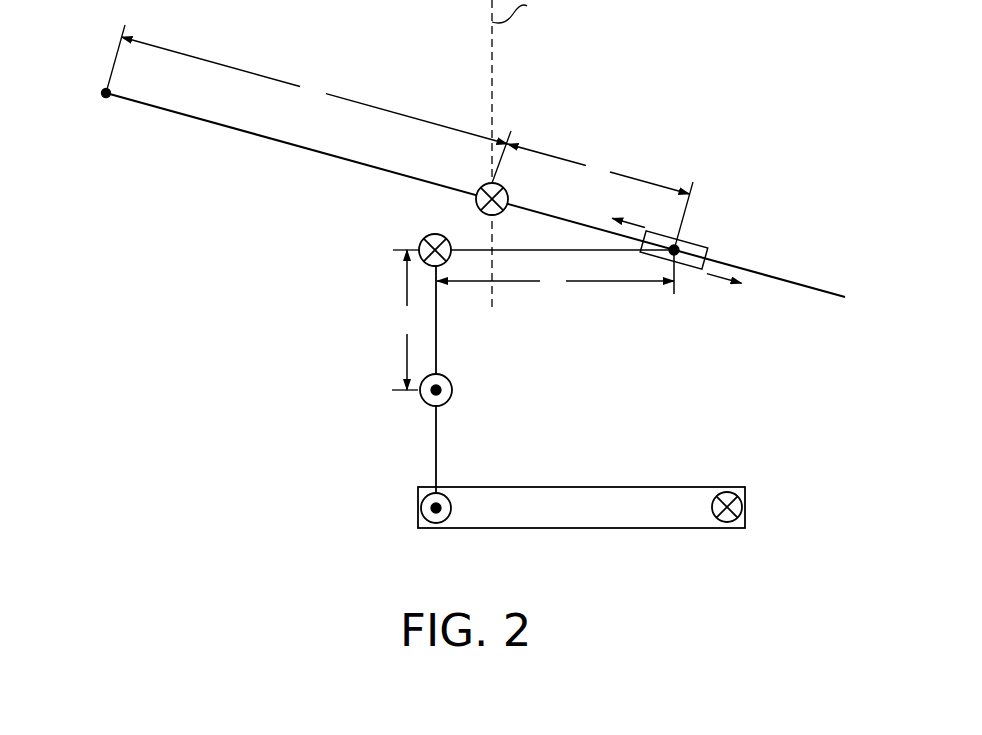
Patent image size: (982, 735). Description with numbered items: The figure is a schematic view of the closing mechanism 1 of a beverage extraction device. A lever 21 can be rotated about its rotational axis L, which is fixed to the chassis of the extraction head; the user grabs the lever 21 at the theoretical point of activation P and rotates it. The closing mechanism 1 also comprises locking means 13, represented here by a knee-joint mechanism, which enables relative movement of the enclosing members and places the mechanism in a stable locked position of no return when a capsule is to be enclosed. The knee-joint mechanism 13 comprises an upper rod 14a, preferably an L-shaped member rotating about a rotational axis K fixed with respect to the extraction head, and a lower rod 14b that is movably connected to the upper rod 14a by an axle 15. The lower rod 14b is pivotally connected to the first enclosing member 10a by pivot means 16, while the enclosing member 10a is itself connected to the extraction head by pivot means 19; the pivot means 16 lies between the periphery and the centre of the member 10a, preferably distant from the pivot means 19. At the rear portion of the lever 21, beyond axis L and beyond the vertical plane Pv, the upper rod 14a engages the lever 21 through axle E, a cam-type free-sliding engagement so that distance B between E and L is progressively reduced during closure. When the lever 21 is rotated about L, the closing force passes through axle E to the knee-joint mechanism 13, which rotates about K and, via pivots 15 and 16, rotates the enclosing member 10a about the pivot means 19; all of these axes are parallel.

The closing mechanism 1 is at (746, 109).
The lever 21 is at (218, 125).
The locking means 13 is at (383, 507).
The upper rod 14a is at (437, 348).
The axle 15 is at (452, 388).
The lower rod 14b is at (437, 443).
The first enclosing member 10a is at (580, 487).
The pivot means 16 is at (437, 523).
The pivot means 19 is at (727, 492).